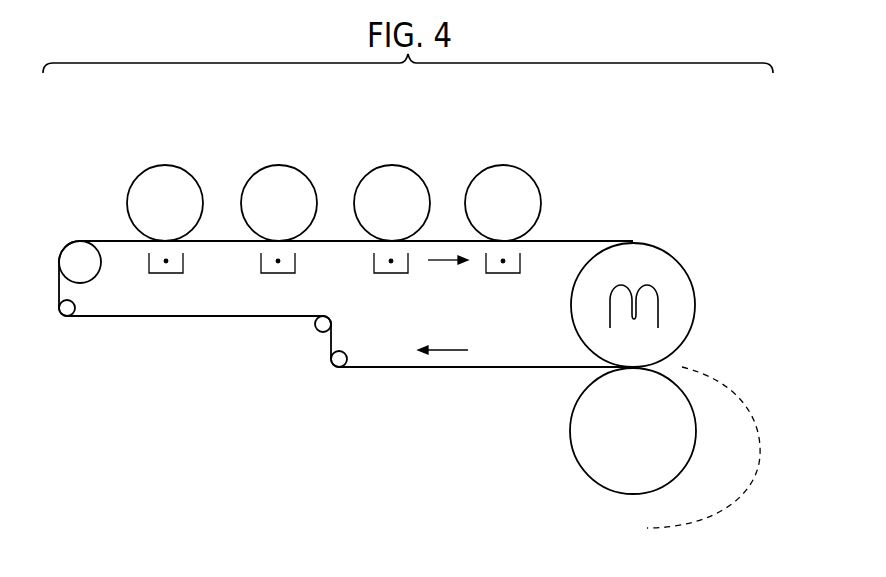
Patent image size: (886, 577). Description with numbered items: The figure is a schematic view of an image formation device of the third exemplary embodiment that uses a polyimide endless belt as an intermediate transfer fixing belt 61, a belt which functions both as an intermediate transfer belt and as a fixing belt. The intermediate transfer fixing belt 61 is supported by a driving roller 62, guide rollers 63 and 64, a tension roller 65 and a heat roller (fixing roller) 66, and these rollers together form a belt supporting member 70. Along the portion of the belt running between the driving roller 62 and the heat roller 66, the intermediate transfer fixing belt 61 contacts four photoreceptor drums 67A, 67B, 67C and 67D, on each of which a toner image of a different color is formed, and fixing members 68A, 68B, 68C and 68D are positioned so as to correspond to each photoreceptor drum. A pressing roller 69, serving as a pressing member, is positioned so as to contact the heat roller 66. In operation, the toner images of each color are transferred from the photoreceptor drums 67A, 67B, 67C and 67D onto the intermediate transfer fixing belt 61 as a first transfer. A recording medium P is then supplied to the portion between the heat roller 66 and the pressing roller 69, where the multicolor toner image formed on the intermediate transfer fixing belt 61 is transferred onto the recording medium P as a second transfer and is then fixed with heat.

The intermediate transfer fixing belt 61 is at (583, 241).
The driving roller 62 is at (80, 245).
The guide roller 63 is at (67, 317).
The guide roller 64 is at (348, 355).
The tension roller 65 is at (316, 330).
The heat roller 66 is at (688, 290).
The photoreceptor drum 67A is at (167, 165).
The photoreceptor drum 67B is at (280, 165).
The photoreceptor drum 67C is at (393, 165).
The photoreceptor drum 67D is at (504, 165).
The fixing member 68A is at (172, 274).
The fixing member 68B is at (289, 274).
The fixing member 68C is at (402, 274).
The fixing member 68D is at (505, 275).
The pressing roller 69 is at (575, 430).
The belt supporting member 70 is at (318, 382).
The recording medium P is at (760, 473).